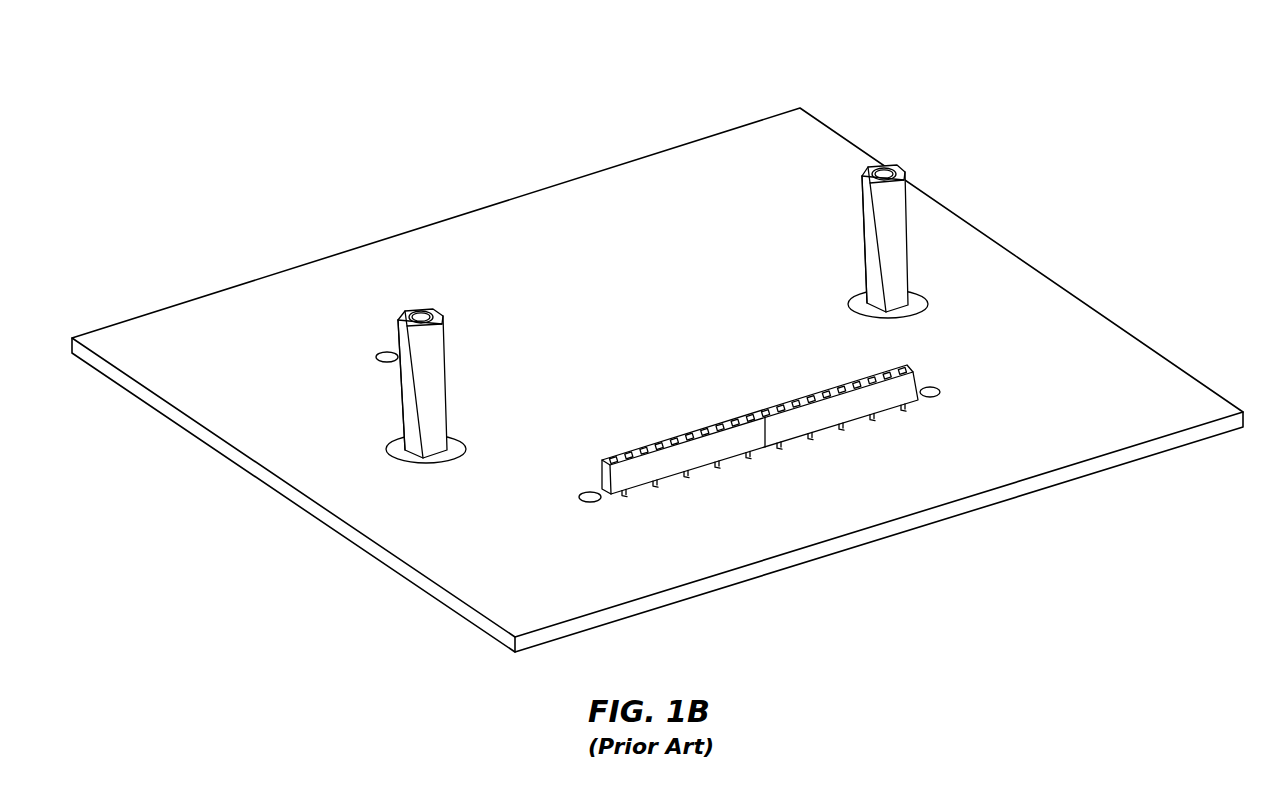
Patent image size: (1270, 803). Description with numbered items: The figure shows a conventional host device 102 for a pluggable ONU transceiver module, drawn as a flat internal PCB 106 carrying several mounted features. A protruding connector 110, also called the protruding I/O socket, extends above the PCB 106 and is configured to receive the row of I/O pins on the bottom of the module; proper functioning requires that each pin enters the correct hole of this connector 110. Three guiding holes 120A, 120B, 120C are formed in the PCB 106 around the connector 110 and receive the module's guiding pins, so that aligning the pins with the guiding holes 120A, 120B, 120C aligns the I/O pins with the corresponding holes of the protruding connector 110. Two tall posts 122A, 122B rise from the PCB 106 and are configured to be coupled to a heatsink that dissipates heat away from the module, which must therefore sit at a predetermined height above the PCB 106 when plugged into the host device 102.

The host device 102 is at (286, 158).
The internal PCB 106 is at (1003, 307).
The protruding connector 110 is at (730, 420).
The guiding hole 120A is at (946, 388).
The guiding hole 120B is at (589, 502).
The guiding hole 120C is at (378, 354).
The post 122A is at (443, 363).
The post 122B is at (870, 214).